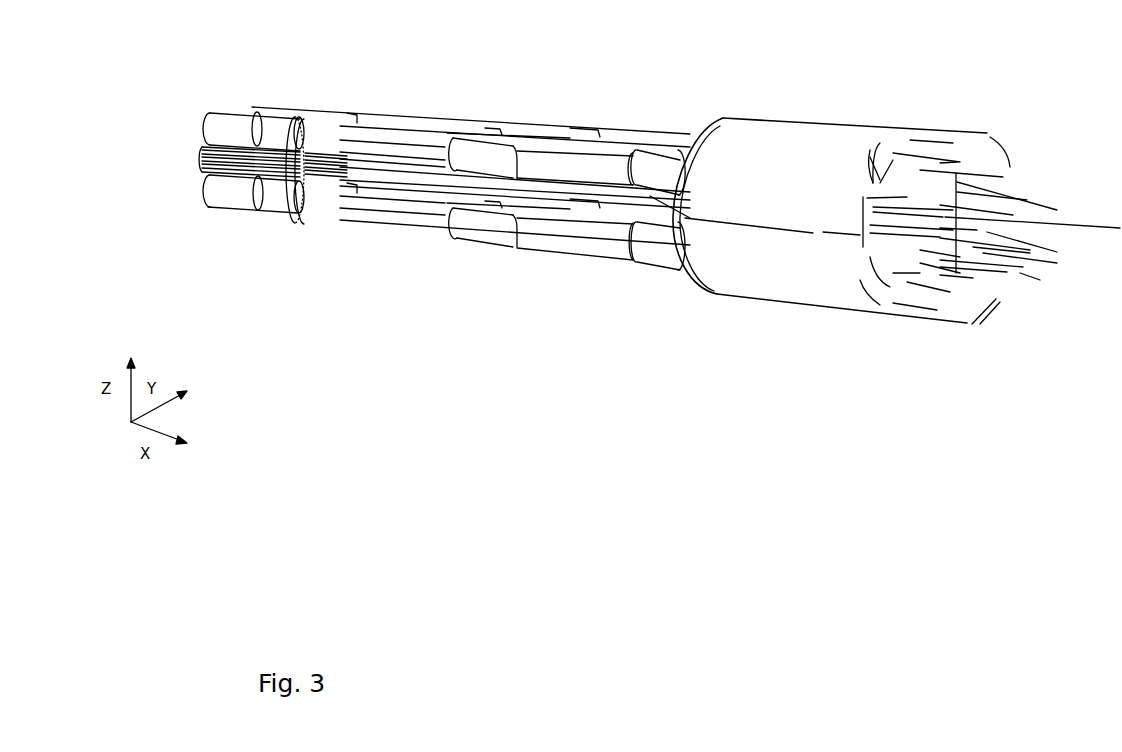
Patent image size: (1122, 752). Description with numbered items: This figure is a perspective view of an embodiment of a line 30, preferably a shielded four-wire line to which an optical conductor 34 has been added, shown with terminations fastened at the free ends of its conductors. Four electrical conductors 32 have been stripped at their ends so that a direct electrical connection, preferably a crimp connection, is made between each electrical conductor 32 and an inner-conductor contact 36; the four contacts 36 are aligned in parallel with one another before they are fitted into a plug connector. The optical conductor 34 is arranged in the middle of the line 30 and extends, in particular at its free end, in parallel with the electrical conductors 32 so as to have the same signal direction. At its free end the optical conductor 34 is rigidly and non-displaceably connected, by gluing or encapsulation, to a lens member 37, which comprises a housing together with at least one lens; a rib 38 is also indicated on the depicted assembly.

The line 30 is at (800, 157).
The electrical conductor 32 is at (593, 140).
The optical conductor 34 is at (535, 148).
The contact 36 is at (387, 117).
The lens member 37 is at (327, 195).
The rib 38 is at (200, 150).